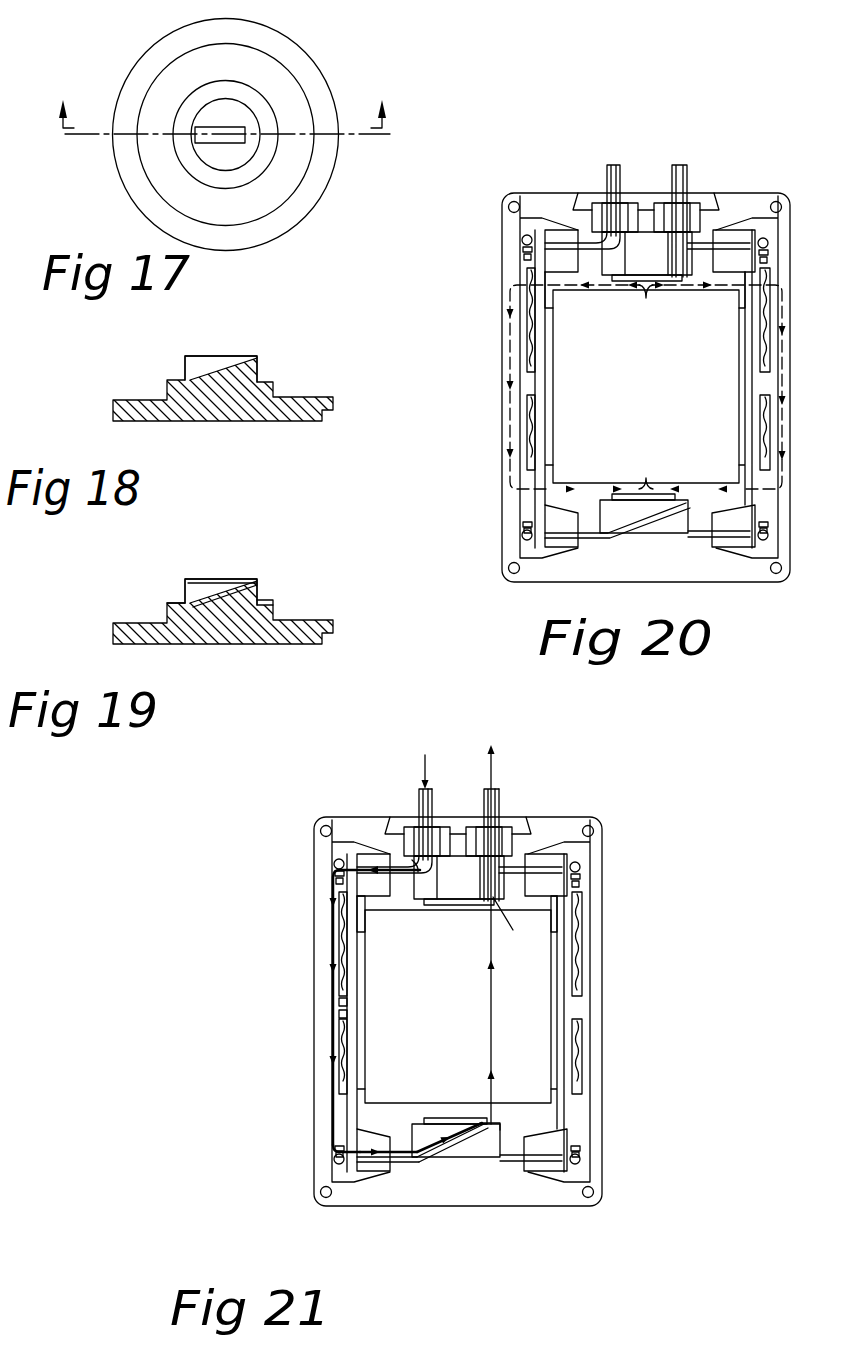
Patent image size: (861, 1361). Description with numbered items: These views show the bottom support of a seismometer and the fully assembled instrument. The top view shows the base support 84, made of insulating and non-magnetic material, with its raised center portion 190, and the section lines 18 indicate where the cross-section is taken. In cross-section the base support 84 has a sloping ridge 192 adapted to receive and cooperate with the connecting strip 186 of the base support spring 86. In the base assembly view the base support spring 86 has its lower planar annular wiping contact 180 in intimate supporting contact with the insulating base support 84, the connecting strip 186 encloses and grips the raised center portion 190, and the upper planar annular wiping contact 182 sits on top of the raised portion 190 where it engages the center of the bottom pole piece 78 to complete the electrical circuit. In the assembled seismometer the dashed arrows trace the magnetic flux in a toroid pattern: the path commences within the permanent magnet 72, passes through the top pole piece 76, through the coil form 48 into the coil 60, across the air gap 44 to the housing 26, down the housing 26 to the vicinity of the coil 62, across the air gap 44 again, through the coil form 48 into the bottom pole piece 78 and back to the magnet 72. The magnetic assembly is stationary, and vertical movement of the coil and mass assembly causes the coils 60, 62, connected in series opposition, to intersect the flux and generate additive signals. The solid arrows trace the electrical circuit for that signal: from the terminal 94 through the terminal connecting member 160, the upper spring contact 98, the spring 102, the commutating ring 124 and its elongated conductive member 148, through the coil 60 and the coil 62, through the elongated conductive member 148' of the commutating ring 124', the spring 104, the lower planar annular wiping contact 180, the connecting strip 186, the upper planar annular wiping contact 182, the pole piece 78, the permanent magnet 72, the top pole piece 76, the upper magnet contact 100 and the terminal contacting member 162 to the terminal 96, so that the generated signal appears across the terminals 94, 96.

In FIG. 17, the section lines 18 is at (220, 109).
In FIG. 20, the housing 26 is at (513, 363).
In FIG. 20, the air gap 44 is at (520, 293).
In FIG. 20, the coil form 48 is at (545, 321).
In FIG. 20, the coil 60 is at (530, 342).
In FIG. 21, the coil 60 is at (297, 944).
In FIG. 20, the coil 62 is at (530, 497).
In FIG. 21, the coil 62 is at (297, 1057).
In FIG. 20, the permanent magnet 72 is at (573, 377).
In FIG. 21, the permanent magnet 72 is at (520, 1006).
In FIG. 20, the top pole piece 76 is at (556, 275).
In FIG. 21, the top pole piece 76 is at (512, 872).
In FIG. 20, the bottom pole piece 78 is at (725, 505).
In FIG. 21, the bottom pole piece 78 is at (601, 1121).
In FIG. 17, the base support 84 is at (317, 198).
In FIG. 18, the base support 84 is at (192, 422).
In FIG. 19, the base support 84 is at (228, 646).
In FIG. 19, the base support spring 86 is at (167, 603).
In FIG. 21, the terminal 94 is at (392, 811).
In FIG. 21, the terminal 96 is at (518, 932).
In FIG. 21, the upper spring contact 98 is at (350, 825).
In FIG. 21, the upper magnet contact 100 is at (573, 829).
In FIG. 21, the spring 102 is at (309, 1009).
In FIG. 21, the spring 104 is at (372, 1207).
In FIG. 21, the commutating ring 124 is at (328, 877).
In FIG. 21, the commutating ring 124' is at (289, 1177).
In FIG. 21, the elongated conductive member 148 is at (286, 1017).
In FIG. 21, the elongated conductive member 148' is at (273, 1041).
In FIG. 21, the terminal connecting member 160 is at (381, 827).
In FIG. 21, the terminal contacting member 162 is at (544, 836).
In FIG. 19, the lower planar annular wiping contact 180 is at (262, 601).
In FIG. 21, the lower planar annular wiping contact 180 is at (443, 1202).
In FIG. 19, the upper planar annular wiping contact 182 is at (240, 583).
In FIG. 21, the upper planar annular wiping contact 182 is at (580, 1078).
In FIG. 19, the connecting strip 186 is at (200, 601).
In FIG. 21, the connecting strip 186 is at (481, 1199).
In FIG. 17, the raised center portion 190 is at (227, 113).
In FIG. 18, the raised center portion 190 is at (248, 375).
In FIG. 19, the raised center portion 190 is at (192, 588).
In FIG. 18, the sloping ridge 192 is at (218, 367).